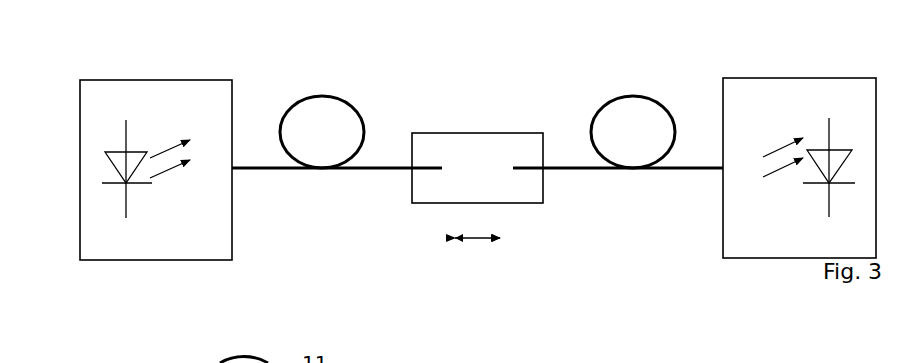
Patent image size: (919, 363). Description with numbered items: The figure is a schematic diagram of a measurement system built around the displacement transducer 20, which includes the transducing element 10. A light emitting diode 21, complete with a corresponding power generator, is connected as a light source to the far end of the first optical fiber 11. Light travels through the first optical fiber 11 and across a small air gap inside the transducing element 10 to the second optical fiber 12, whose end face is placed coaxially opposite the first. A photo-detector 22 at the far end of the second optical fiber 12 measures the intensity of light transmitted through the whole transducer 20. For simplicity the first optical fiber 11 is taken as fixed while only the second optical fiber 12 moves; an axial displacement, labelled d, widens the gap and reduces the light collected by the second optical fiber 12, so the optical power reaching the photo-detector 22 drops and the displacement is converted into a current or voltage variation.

The transducing element 10 is at (482, 137).
The first optical fiber 11 is at (322, 119).
The second optical fiber 12 is at (633, 118).
The displacement transducer 20 is at (141, 293).
The light emitting diode 21 is at (181, 80).
The photo-detector 22 is at (856, 77).